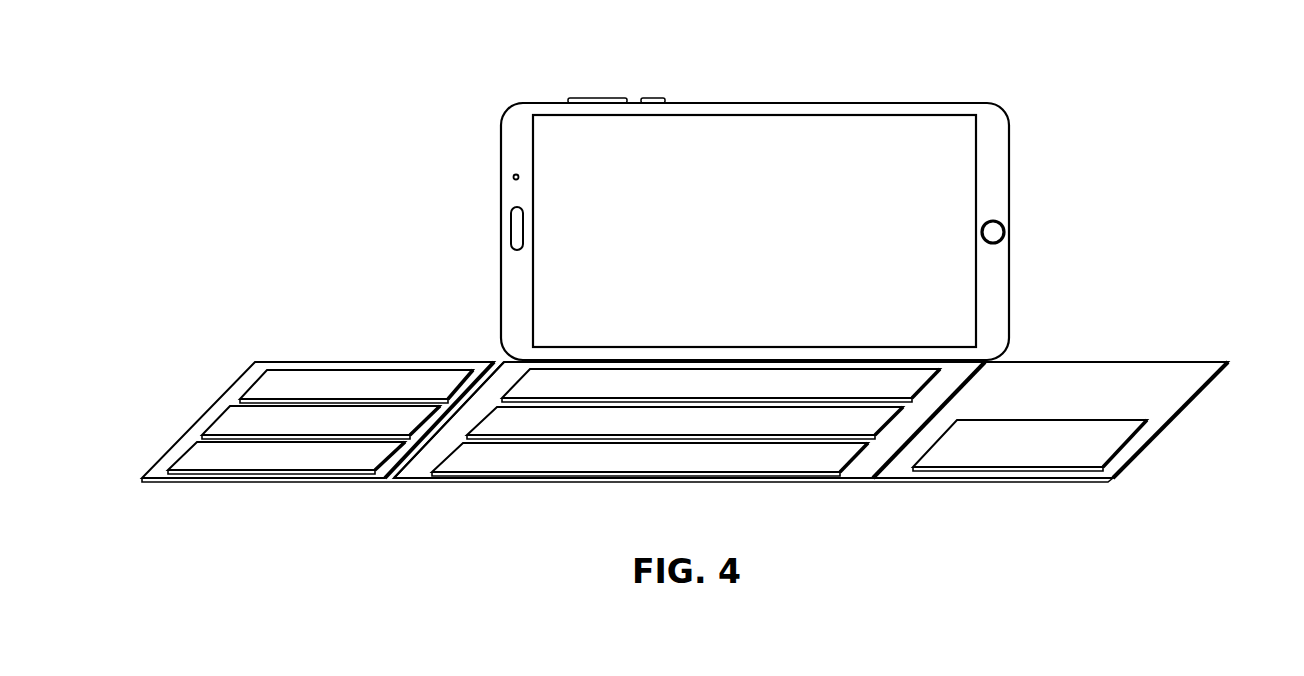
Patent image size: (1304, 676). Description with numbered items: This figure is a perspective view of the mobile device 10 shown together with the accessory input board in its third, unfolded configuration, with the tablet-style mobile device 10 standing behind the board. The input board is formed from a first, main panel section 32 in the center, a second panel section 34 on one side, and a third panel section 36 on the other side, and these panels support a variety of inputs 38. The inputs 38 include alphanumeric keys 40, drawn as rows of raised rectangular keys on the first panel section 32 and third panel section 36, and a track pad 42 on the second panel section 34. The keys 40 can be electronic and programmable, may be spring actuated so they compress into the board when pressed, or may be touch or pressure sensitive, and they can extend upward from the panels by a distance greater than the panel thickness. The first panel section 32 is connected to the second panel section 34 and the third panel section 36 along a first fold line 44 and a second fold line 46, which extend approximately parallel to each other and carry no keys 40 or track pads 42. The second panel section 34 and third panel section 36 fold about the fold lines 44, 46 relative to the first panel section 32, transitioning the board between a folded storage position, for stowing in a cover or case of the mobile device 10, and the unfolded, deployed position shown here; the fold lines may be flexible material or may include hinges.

The mobile device 10 is at (1010, 62).
The first, main panel section 32 is at (587, 462).
The second panel section 34 is at (1132, 372).
The third panel section 36 is at (218, 422).
The inputs 38 is at (349, 361).
The alphanumeric keys 40 is at (590, 378).
The track pad 42 is at (1098, 452).
The first fold line 44 is at (975, 378).
The second fold line 46 is at (482, 372).